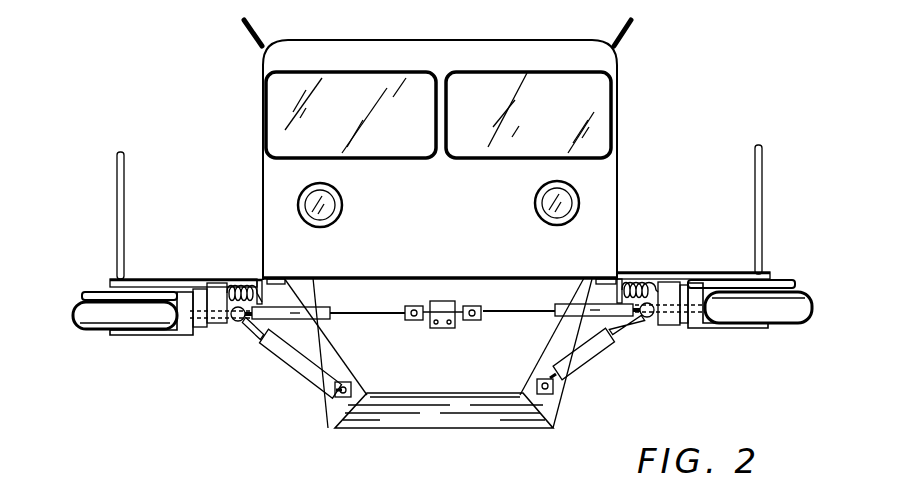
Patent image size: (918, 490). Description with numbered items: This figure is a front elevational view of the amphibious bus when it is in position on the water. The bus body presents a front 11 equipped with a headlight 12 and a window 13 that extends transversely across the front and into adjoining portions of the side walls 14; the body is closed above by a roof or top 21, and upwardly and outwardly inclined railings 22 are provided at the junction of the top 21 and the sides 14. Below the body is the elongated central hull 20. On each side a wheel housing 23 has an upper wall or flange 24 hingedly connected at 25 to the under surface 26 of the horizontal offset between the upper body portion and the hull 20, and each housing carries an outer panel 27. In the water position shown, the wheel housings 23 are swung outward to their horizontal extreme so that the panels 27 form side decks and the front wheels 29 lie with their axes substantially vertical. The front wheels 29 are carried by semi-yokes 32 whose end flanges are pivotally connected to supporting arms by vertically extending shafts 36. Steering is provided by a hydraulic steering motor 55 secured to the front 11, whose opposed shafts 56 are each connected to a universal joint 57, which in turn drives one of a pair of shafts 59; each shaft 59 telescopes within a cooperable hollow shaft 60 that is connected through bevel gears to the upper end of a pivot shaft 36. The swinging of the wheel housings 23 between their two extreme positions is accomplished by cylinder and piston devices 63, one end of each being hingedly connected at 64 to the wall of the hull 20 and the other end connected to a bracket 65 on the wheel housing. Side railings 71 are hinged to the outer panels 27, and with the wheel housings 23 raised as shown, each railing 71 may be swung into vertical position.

The front 11 is at (410, 212).
The headlight 12 is at (330, 198).
The window 13 is at (290, 102).
The side walls 14 is at (262, 182).
The hull 20 is at (465, 383).
The roof or top 21 is at (460, 40).
The railings 22 is at (244, 32).
The wheel housings 23 is at (163, 272).
The upper walls or flanges 24 is at (253, 290).
The hinge connection 25 is at (260, 280).
The under surface 26 is at (280, 280).
The outer panels 27 is at (132, 280).
The front wheels 29 is at (85, 323).
The semi-yokes 32 is at (192, 332).
The shafts 36 is at (220, 325).
The hydraulic steering motor 55 is at (440, 300).
The opposed shafts 56 is at (440, 328).
The universal joints 57 is at (408, 320).
The shafts 59 is at (393, 310).
The hollow shafts 60 is at (322, 282).
The cylinder and piston devices 63 is at (298, 355).
The hinge connection 64 is at (338, 392).
The bracket 65 is at (246, 321).
The side railings 71 is at (116, 172).